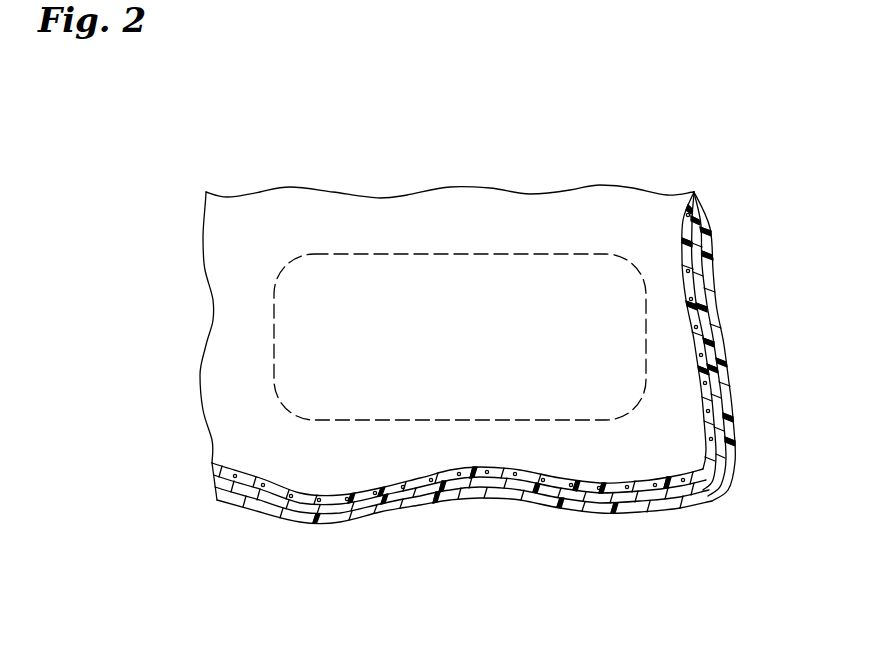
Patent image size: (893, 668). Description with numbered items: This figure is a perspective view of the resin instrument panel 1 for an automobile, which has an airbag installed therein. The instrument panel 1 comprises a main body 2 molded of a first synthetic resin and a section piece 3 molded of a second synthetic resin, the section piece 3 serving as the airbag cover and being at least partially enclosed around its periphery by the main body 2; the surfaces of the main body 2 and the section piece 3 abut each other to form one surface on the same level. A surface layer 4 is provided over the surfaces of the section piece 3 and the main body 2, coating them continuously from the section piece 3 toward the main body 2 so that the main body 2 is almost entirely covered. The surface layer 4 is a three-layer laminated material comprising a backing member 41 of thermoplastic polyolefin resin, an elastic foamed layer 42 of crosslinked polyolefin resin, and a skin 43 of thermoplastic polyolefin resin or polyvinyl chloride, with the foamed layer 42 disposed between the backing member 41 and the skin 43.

The instrument panel 1 is at (238, 543).
The main body 2 is at (668, 510).
The section piece 3 is at (647, 325).
The surface layer 4 is at (462, 548).
The backing member 41 is at (377, 572).
The elastic foamed layer 42 is at (425, 483).
The skin 43 is at (380, 492).